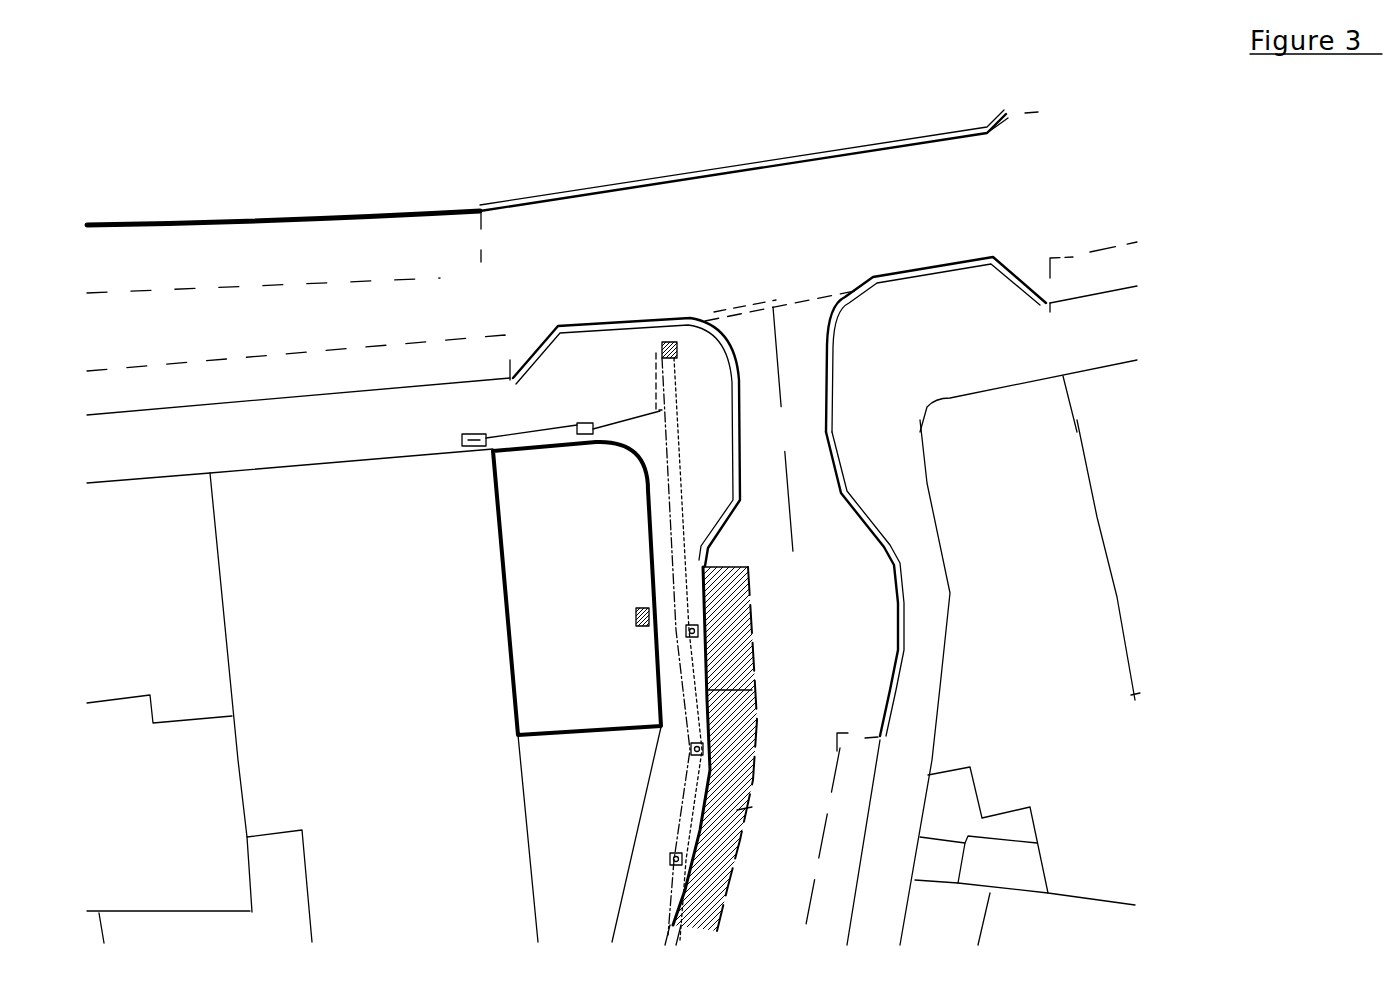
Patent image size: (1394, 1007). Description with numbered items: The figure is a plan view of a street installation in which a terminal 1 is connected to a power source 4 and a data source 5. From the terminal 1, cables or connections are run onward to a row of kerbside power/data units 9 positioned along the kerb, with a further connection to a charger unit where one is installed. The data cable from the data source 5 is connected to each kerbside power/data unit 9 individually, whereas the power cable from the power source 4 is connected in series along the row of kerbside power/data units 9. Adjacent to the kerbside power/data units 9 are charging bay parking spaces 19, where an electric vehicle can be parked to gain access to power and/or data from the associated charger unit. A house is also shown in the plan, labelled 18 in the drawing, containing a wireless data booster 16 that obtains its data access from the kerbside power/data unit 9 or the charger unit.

The terminal 1 is at (661, 345).
The power source 4 is at (576, 428).
The data source 5 is at (461, 440).
The kerbside power/data unit 9 is at (669, 858).
The wireless data booster 16 is at (633, 610).
The building 18 is at (577, 588).
The charging bay parking space 19 is at (741, 580).